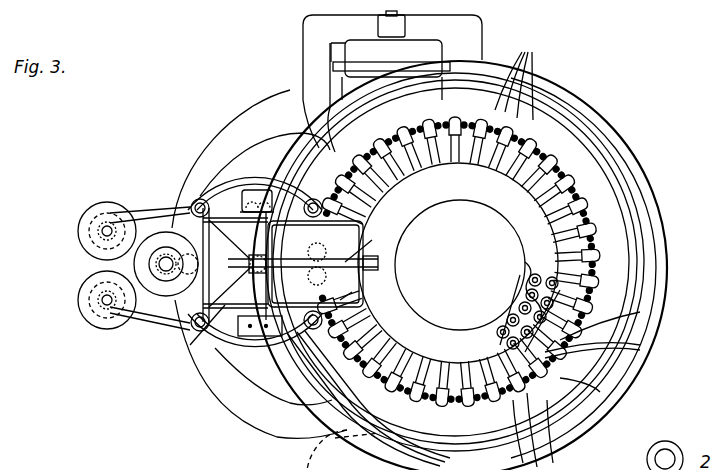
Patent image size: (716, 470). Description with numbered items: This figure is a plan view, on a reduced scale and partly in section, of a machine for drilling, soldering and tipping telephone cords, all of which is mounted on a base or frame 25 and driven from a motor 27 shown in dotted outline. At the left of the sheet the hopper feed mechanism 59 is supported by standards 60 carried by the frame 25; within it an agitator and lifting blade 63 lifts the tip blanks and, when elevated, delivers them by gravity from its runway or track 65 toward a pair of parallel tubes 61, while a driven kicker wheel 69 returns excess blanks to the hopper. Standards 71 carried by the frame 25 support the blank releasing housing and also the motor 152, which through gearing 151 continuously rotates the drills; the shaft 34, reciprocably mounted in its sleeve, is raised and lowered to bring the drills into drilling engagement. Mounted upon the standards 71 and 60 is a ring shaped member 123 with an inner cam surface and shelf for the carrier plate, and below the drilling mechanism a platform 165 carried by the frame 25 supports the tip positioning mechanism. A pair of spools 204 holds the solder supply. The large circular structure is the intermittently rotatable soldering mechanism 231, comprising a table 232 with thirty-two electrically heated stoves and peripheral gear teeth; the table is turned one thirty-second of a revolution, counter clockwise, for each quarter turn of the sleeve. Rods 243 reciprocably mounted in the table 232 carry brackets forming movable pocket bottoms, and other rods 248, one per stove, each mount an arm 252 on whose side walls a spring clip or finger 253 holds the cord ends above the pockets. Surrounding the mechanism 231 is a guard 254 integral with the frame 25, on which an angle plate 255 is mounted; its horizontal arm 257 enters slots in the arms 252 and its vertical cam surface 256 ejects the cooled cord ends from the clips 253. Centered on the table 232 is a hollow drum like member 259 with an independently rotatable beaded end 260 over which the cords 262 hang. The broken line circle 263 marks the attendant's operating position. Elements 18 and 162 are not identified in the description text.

The base or frame 25 is at (585, 60).
The guard 254 is at (643, 220).
The soldering mechanism 231 is at (582, 168).
The drum body 18 is at (322, 128).
The beaded end 260 is at (530, 213).
The drum like member 259 is at (527, 262).
The cam surface 256 is at (490, 130).
The rod 248 is at (528, 287).
The rod 243 is at (519, 312).
The table 232 is at (640, 312).
The arm 252 is at (640, 345).
The spring clip or finger 253 is at (600, 392).
The cords 262 is at (548, 462).
The motor 27 is at (352, 46).
The arm 257 is at (297, 97).
The angle plate 255 is at (306, 116).
The standards 60 is at (305, 158).
The platform 165 is at (182, 318).
The tubes 61 is at (222, 203).
The standards 71 is at (197, 203).
The block 162 is at (255, 190).
The gearing 151 is at (255, 368).
The ring shaped member 123 is at (213, 358).
The motor 152 is at (147, 240).
The spools 204 is at (88, 237).
The kicker wheel 69 is at (314, 266).
The shaft 34 is at (258, 284).
The agitator and lifting blade 63 is at (382, 270).
The runway or track 65 is at (332, 260).
The hopper feed mechanism 59 is at (352, 295).
The broken line circle 263 is at (323, 442).